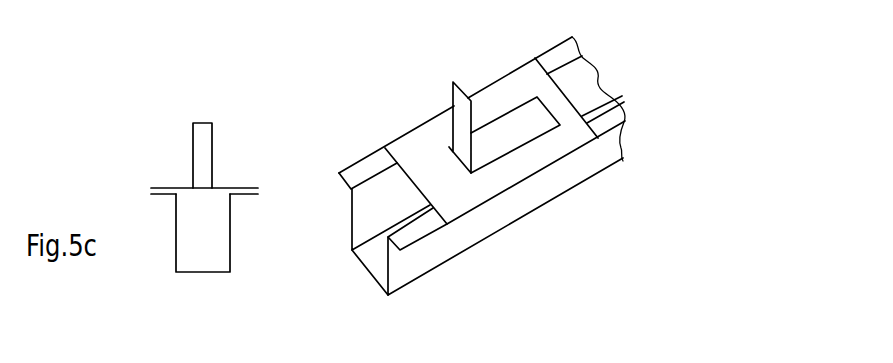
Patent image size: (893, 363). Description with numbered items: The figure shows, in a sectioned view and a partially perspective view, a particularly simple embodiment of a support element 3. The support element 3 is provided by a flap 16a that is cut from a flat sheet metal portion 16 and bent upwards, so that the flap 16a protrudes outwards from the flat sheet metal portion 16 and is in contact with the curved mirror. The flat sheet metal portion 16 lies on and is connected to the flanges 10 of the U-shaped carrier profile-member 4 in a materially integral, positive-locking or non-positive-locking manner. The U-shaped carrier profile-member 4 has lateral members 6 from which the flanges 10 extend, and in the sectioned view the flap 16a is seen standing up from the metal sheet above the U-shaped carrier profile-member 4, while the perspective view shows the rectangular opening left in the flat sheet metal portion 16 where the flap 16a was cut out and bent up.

The support element 3 is at (179, 154).
The U-shaped carrier profile-member 4 is at (230, 247).
The lateral members 6 is at (351, 228).
The flanges 10 is at (358, 172).
The flat sheet metal portion 16 is at (224, 188).
The flap 16a is at (460, 126).